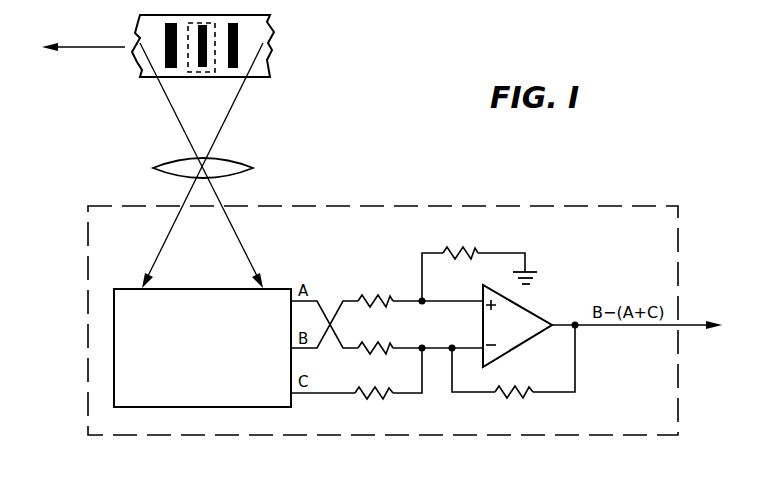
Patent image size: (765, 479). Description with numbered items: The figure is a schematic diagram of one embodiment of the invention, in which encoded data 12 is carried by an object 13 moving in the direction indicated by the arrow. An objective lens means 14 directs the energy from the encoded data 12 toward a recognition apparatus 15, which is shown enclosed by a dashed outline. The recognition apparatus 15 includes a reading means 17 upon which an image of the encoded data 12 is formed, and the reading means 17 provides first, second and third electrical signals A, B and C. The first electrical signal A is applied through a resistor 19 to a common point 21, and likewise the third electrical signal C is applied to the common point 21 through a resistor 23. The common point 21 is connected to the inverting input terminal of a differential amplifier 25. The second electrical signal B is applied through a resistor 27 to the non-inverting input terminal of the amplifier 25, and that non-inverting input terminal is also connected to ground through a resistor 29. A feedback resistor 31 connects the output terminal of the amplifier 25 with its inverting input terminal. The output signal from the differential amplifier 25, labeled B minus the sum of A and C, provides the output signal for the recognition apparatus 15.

The encoded data 12 is at (238, 31).
The object 13 is at (269, 60).
The objective lens means 14 is at (233, 160).
The recognition apparatus 15 is at (523, 205).
The reading means 17 is at (212, 344).
The resistor 19 is at (387, 345).
The common point 21 is at (422, 346).
The resistor 23 is at (372, 398).
The differential amplifier 25 is at (517, 322).
The resistor 27 is at (387, 294).
The resistor 29 is at (457, 250).
The feedback resistor 31 is at (512, 400).